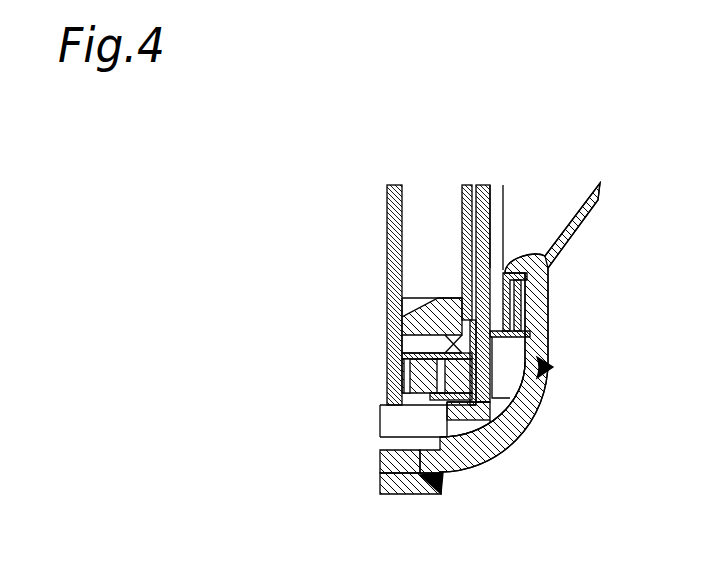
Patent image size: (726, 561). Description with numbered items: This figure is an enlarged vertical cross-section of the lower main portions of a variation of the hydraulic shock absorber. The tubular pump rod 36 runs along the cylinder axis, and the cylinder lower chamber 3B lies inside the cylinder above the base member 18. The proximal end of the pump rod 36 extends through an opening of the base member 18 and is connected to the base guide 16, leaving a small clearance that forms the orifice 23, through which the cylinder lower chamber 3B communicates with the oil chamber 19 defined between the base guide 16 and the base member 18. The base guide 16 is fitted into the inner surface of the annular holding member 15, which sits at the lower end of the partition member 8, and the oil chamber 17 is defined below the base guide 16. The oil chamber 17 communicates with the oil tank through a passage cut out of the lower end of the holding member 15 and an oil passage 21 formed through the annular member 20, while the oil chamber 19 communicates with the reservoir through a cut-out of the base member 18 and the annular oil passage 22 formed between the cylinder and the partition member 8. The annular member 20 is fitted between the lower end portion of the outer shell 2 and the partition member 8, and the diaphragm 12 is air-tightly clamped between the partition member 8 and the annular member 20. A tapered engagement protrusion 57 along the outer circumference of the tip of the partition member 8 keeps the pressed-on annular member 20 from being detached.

The outer shell 2 is at (597, 207).
The cylinder lower chamber 3B is at (433, 208).
The partition member 8 is at (483, 189).
The diaphragm 12 is at (500, 205).
The holding member 15 is at (500, 445).
The base guide 16 is at (520, 433).
The oil chamber 17 is at (450, 472).
The base member 18 is at (405, 325).
The oil chamber 19 is at (400, 347).
The annular member 20 is at (537, 330).
The oil passage 21 is at (548, 266).
The annular oil passage 22 is at (483, 227).
The orifice 23 is at (400, 273).
The pump rod 36 is at (403, 192).
The engagement protrusion 57 is at (547, 385).